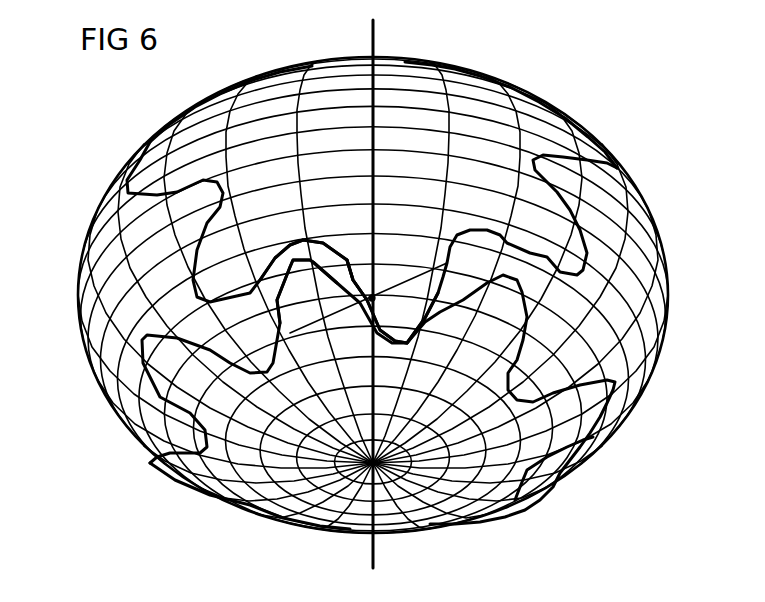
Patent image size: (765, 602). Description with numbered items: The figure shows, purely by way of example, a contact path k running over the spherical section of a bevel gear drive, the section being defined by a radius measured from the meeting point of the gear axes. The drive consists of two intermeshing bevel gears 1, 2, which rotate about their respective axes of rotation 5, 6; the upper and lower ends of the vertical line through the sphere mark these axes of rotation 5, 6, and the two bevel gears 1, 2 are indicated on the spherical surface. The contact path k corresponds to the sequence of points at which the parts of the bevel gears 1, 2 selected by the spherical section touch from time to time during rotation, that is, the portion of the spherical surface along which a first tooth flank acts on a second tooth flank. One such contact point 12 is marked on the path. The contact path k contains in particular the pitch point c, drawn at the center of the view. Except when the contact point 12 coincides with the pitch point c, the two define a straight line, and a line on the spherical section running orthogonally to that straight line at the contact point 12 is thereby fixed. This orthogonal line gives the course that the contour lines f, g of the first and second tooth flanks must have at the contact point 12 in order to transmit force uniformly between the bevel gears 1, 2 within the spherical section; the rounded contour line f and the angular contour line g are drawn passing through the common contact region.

The axis of rotation 5 is at (378, 34).
The axis of rotation 6 is at (378, 552).
The bevel gear 1 is at (535, 133).
The bevel gear 2 is at (563, 435).
The contact point 12 is at (357, 307).
The contour line f is at (355, 266).
The contour line g is at (336, 279).
The contact path k is at (400, 285).
The pitch point c is at (374, 296).